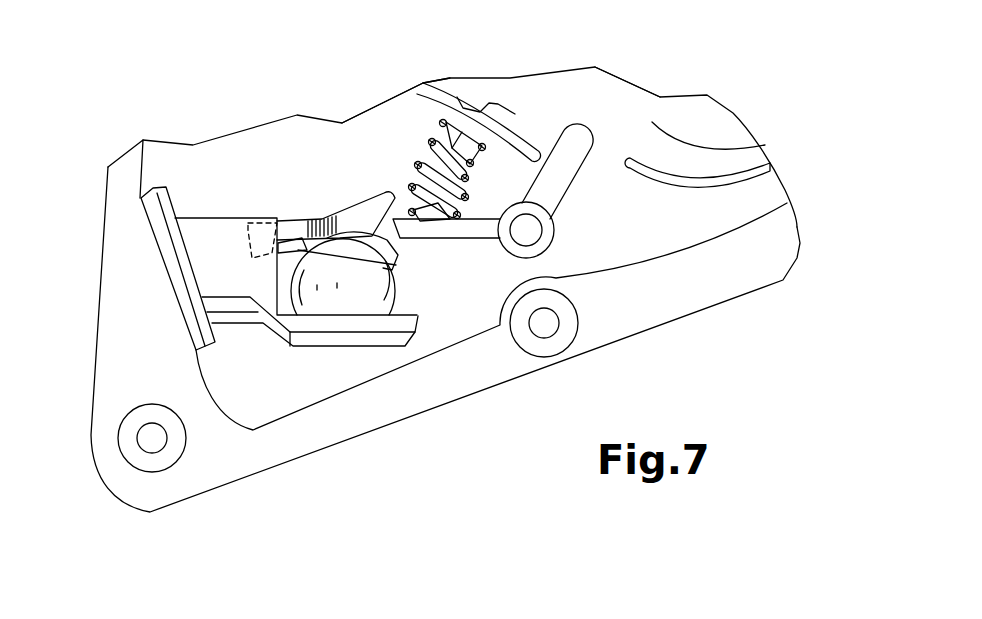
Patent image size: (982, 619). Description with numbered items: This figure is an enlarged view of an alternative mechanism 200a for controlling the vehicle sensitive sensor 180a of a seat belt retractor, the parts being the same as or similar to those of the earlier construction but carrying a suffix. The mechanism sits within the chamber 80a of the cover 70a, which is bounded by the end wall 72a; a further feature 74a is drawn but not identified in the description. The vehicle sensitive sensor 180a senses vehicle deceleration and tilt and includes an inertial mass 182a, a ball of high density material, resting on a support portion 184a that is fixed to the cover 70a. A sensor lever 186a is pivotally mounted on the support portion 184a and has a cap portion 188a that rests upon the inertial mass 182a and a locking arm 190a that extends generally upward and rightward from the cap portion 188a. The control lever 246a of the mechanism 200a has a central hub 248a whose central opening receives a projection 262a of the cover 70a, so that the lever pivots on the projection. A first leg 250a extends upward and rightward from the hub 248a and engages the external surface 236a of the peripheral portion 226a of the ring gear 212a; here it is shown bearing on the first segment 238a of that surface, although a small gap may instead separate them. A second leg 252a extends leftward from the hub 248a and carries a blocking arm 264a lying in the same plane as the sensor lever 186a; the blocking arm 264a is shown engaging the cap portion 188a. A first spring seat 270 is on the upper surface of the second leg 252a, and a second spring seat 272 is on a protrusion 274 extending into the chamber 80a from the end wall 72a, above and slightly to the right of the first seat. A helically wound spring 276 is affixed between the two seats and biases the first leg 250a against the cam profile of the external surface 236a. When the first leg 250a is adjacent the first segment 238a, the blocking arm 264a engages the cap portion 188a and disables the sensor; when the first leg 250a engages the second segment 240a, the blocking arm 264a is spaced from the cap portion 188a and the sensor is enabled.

The cover 70a is at (207, 447).
The end wall 72a is at (640, 247).
The base edge portion 74a is at (683, 292).
The chamber 80a is at (760, 214).
The vehicle sensitive sensor 180a is at (268, 353).
The inertial mass 182a is at (353, 293).
The support portion 184a is at (345, 337).
The sensor lever 186a is at (288, 230).
The cap portion 188a is at (393, 253).
The locking arm 190a is at (378, 200).
The mechanism 200a is at (419, 78).
The ring gear 212a is at (660, 110).
The peripheral portion 226a is at (600, 107).
The external surface 236a is at (740, 123).
The first segment 238a is at (772, 160).
The second segment 240a is at (458, 98).
The control lever 246a is at (544, 253).
The central hub 248a is at (550, 238).
The first leg 250a is at (567, 170).
The second leg 252a is at (483, 223).
The projection 262a is at (530, 228).
The blocking arm 264a is at (392, 200).
The first spring seat 270 is at (438, 210).
The second spring seat 272 is at (463, 137).
The protrusion 274 is at (457, 138).
The helically wound spring 276 is at (430, 140).